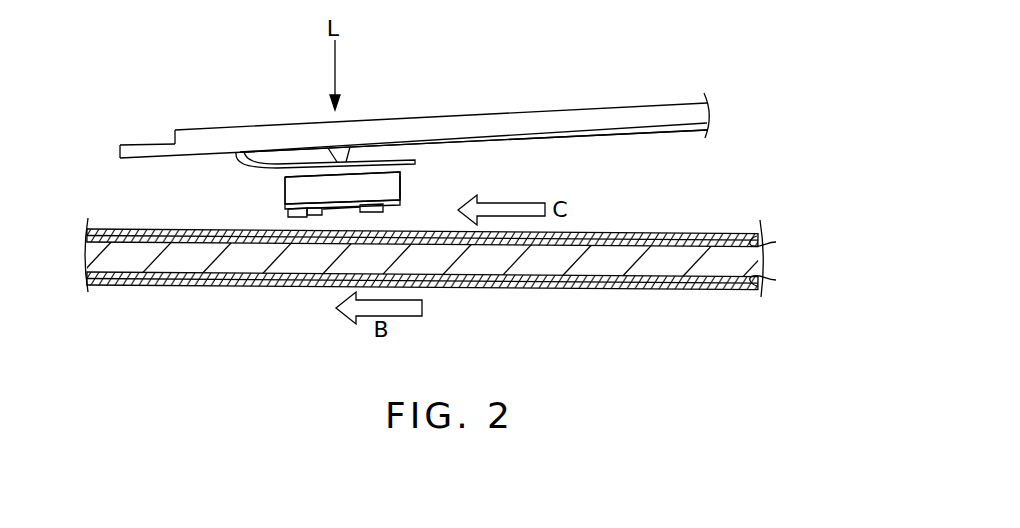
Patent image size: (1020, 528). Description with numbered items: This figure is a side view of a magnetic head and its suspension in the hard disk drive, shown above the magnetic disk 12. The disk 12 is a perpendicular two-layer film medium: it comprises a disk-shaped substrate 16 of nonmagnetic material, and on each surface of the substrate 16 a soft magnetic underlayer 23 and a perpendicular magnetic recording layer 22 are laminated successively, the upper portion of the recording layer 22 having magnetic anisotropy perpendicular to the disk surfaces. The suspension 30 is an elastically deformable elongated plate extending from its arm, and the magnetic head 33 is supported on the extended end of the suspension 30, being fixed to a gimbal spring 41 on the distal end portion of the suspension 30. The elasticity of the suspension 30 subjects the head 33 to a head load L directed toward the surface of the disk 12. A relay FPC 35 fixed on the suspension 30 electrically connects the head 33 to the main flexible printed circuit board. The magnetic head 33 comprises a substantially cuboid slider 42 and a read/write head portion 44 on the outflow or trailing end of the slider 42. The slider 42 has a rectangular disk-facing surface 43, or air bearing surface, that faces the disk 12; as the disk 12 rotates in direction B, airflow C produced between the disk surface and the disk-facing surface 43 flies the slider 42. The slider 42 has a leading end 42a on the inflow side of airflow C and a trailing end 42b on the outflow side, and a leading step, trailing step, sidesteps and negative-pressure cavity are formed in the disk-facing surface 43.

The magnetic disk 12 is at (456, 277).
The disk-shaped substrate 16 is at (662, 270).
The perpendicular magnetic recording layer 22 is at (688, 233).
The soft magnetic underlayer 23 is at (776, 242).
The suspension 30 is at (585, 118).
The magnetic head 33 is at (414, 189).
The relay FPC 35 is at (651, 134).
The gimbal spring 41 is at (403, 159).
The slider 42 is at (317, 182).
The leading end 42a is at (401, 183).
The trailing end 42b is at (288, 203).
The disk-facing surface 43 is at (336, 231).
The read/write head portion 44 is at (290, 191).